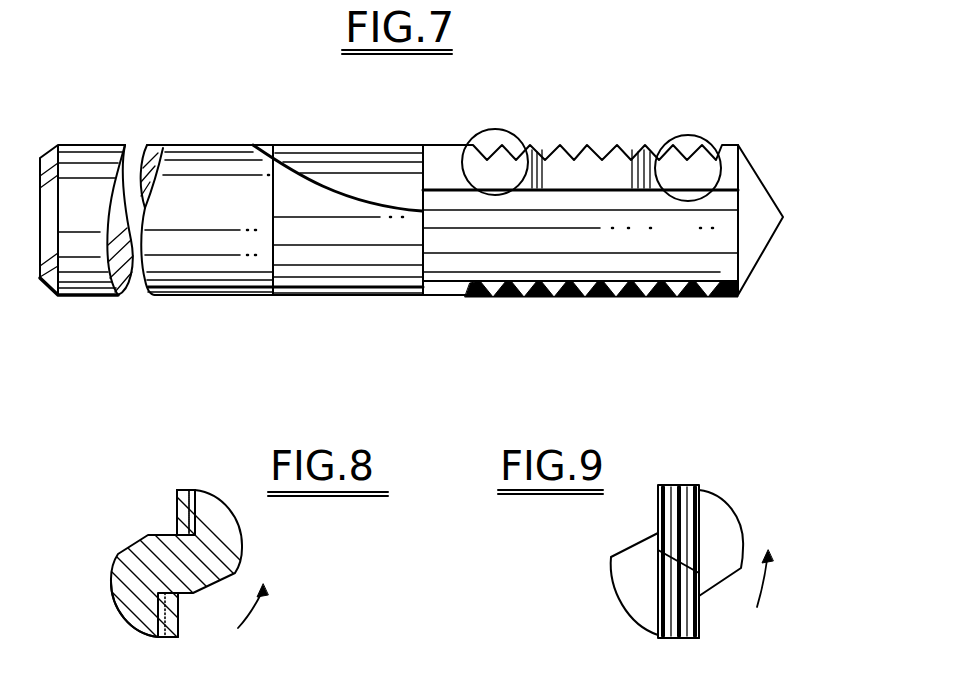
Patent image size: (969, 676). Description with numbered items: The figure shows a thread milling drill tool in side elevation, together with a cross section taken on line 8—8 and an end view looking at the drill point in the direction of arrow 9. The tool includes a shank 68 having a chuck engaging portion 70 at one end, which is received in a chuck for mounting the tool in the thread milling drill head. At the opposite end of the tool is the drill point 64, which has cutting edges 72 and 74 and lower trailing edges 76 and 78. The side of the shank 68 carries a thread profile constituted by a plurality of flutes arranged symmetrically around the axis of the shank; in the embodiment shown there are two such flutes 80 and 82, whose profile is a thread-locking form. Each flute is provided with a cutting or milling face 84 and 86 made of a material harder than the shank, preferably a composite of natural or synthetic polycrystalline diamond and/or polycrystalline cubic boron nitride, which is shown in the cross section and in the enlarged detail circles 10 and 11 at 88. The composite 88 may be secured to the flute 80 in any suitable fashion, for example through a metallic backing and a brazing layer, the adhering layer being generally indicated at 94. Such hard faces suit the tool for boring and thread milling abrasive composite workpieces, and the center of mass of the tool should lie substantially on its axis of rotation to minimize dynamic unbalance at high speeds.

In FIG. 7, the section line 8— 8 is at (594, 110).
In FIG. 7, the arrow 9 is at (806, 217).
In FIG. 7, the detail circle for FIG. 10 is at (496, 129).
In FIG. 7, the detail circle for FIG. 11 is at (696, 137).
In FIG. 7, the drill point 64 is at (760, 191).
In FIG. 7, the shank 68 is at (345, 145).
In FIG. 7, the chuck engaging portion 70 is at (193, 145).
In FIG. 9, the cutting edge 72 is at (657, 503).
In FIG. 9, the cutting edge 74 is at (703, 612).
In FIG. 9, the lower trailing edge 76 is at (657, 591).
In FIG. 9, the lower trailing edge 78 is at (704, 520).
In FIG. 7, the flute 80 is at (722, 273).
In FIG. 8, the flute 80 is at (221, 510).
In FIG. 8, the flute 82 is at (132, 614).
In FIG. 7, the cutting or milling face 84 is at (553, 146).
In FIG. 8, the cutting or milling face 84 is at (178, 500).
In FIG. 8, the cutting or milling face 86 is at (178, 616).
In FIG. 8, the polycrystalline diamond and/or cubic boron nitride composite 88 is at (184, 490).
In FIG. 8, the adhering layer 94 is at (177, 512).